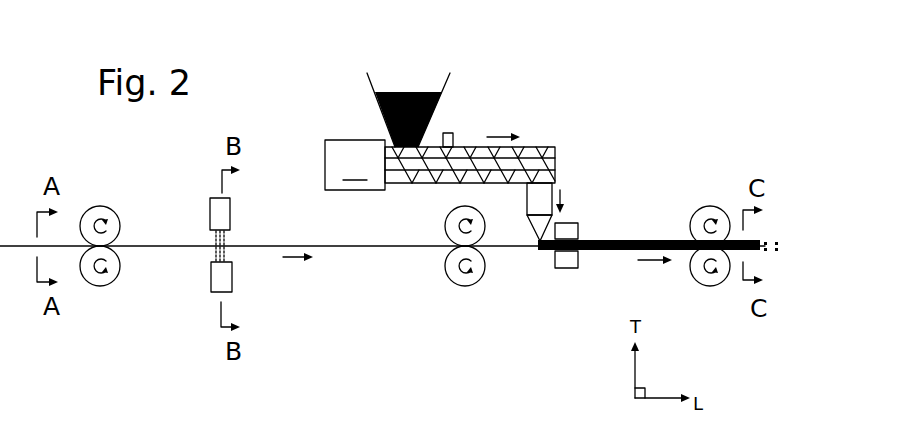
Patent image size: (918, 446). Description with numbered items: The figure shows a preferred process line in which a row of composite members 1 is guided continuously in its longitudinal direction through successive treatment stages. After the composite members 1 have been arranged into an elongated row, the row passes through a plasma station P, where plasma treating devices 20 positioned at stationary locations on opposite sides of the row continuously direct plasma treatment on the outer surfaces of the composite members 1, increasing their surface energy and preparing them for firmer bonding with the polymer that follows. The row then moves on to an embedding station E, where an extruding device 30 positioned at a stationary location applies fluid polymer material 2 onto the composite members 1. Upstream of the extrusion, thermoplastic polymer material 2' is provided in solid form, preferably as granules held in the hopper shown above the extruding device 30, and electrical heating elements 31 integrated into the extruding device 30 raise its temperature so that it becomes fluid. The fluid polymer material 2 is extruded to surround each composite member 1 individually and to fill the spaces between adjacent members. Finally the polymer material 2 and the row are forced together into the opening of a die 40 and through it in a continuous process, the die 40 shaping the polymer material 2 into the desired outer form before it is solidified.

The composite members 1 is at (362, 246).
The polymer material 2 is at (649, 212).
The thermoplastic polymer material in solid form 2' is at (408, 87).
The plasma treating devices 20 is at (210, 212).
The extruding device 30 is at (555, 147).
The electrical heating elements 31 is at (451, 133).
The die 40 is at (572, 268).
The plasma treatment station P is at (278, 148).
The embedding station E is at (630, 123).